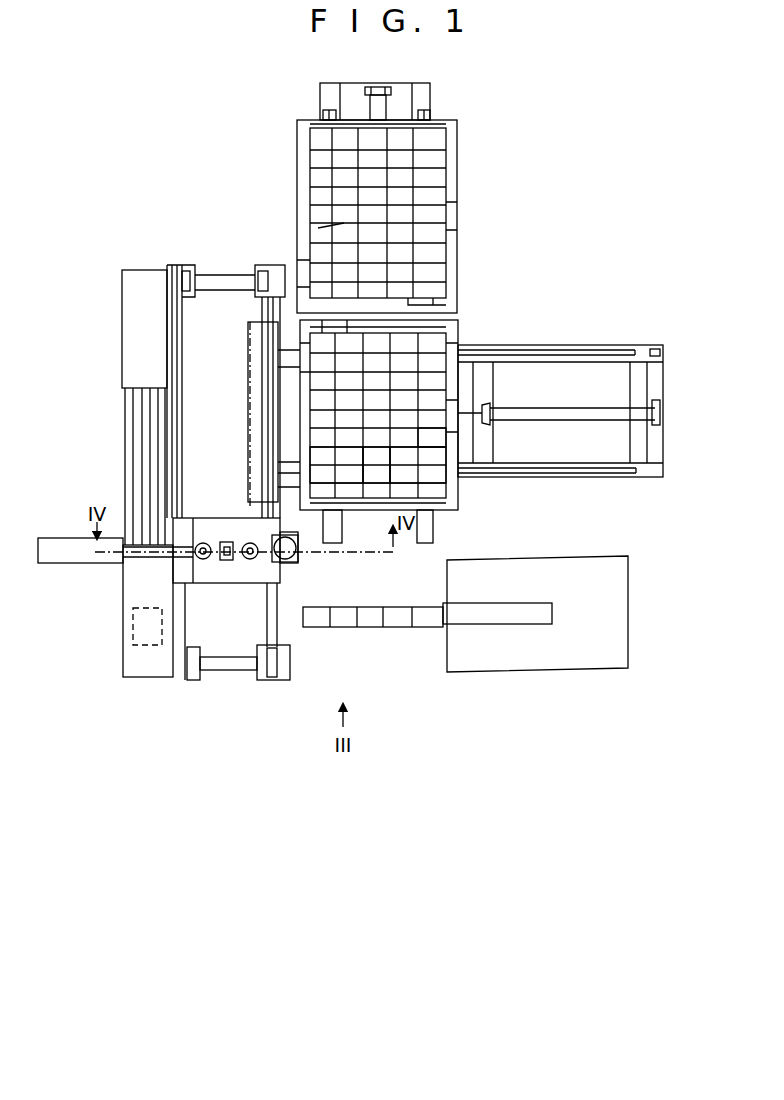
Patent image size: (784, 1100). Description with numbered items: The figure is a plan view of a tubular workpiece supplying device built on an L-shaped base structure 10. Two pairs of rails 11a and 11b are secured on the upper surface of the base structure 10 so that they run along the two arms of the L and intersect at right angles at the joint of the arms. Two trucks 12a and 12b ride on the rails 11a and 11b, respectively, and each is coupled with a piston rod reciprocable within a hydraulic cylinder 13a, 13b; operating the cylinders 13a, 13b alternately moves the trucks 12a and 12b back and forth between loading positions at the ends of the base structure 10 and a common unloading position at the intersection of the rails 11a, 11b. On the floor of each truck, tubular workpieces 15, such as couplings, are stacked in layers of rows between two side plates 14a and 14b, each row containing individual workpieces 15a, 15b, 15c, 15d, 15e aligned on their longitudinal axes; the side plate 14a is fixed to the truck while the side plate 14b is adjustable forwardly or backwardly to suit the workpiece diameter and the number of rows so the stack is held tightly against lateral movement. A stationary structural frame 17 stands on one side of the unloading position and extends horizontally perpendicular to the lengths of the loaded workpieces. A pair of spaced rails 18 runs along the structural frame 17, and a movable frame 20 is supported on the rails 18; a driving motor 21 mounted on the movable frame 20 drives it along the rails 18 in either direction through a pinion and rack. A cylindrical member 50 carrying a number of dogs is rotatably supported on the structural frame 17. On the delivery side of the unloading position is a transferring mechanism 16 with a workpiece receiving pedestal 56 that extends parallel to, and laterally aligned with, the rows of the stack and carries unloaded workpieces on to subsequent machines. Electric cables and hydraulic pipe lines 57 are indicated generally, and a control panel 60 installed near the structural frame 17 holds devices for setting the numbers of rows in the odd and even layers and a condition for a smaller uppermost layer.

The base structure 10 is at (400, 87).
The rails 11a is at (590, 362).
The rails 11b is at (328, 112).
The truck 12a is at (458, 340).
The truck 12b is at (455, 191).
The piston rod and hydraulic cylinder 13a is at (516, 412).
The piston rod and hydraulic cylinder 13b is at (377, 88).
The side plate 14a is at (420, 300).
The side plate 14b is at (450, 124).
The tubular workpieces 15 is at (425, 182).
The tubular workpiece 15a is at (318, 455).
The tubular workpiece 15b is at (342, 460).
The tubular workpiece 15c is at (375, 460).
The tubular workpiece 15d is at (412, 458).
The tubular workpiece 15e is at (458, 448).
The transferring mechanism 16 is at (622, 597).
The structural frame 17 is at (222, 276).
The rails 18 is at (265, 309).
The movable frame 20 is at (219, 528).
The driving motor 21 is at (290, 564).
The cylindrical member 50 is at (248, 378).
The workpiece receiving pedestal 56 is at (370, 623).
The electric cables and hydraulic pipe lines 57 is at (135, 436).
The control panel 60 is at (133, 625).